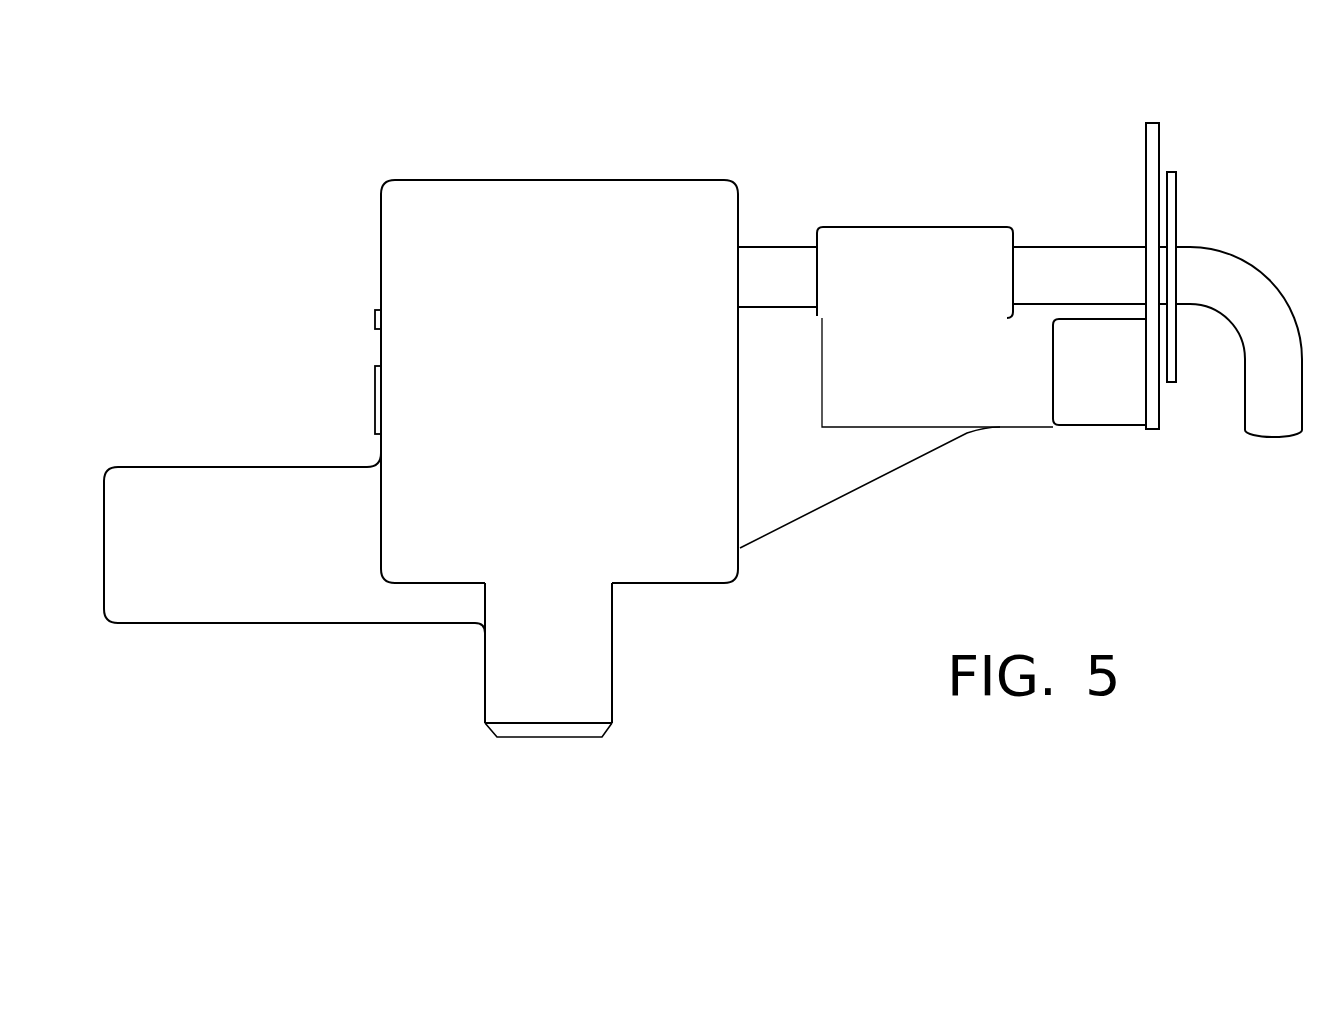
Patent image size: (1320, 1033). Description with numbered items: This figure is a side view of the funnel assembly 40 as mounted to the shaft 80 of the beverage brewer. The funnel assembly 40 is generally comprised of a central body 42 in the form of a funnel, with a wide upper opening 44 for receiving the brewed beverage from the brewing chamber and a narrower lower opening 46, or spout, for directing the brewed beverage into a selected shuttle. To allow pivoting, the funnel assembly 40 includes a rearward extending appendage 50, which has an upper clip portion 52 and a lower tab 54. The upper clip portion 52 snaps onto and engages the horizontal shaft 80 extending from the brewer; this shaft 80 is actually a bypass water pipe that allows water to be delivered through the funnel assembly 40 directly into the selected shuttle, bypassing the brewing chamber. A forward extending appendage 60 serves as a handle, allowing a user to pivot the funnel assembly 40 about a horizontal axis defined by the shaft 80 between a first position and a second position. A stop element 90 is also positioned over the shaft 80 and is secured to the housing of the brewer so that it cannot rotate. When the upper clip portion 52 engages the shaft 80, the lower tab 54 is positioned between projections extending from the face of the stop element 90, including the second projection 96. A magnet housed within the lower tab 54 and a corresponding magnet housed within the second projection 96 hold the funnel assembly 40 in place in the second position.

The funnel assembly 40 is at (300, 288).
The central body 42 is at (687, 534).
The wide upper opening 44 is at (546, 190).
The lower opening 46 is at (530, 737).
The rearward extending appendage 50 is at (826, 460).
The upper clip portion 52 is at (880, 231).
The lower tab 54 is at (1050, 412).
The forward extending appendage 60 is at (212, 498).
The shaft 80 is at (758, 250).
The stop element 90 is at (1155, 422).
The second projection 96 is at (1075, 417).